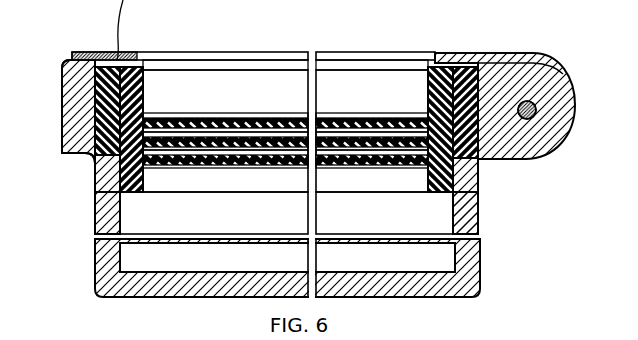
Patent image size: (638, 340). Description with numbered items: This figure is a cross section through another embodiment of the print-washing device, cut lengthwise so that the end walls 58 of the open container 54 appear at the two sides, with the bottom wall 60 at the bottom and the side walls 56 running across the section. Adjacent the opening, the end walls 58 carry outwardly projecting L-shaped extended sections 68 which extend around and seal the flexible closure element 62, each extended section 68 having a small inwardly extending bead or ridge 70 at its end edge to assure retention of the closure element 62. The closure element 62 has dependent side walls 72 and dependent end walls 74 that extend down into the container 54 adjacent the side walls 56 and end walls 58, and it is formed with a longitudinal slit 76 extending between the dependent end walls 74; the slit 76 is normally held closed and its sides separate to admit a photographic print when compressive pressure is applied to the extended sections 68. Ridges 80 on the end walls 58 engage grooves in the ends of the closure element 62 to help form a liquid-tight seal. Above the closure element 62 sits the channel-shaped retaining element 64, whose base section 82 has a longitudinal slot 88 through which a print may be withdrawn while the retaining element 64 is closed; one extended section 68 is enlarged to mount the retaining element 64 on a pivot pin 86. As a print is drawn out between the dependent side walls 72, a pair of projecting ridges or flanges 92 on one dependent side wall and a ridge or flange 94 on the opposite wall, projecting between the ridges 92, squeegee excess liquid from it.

The open container 54 is at (88, 187).
The side walls 56 is at (252, 222).
The end walls 58 is at (96, 220).
The bottom wall 60 is at (347, 272).
The flexible closure element 62 is at (151, 88).
The channel-shaped retaining element 64 is at (502, 48).
The extended sections 68 is at (62, 146).
The bead or ridge 70 is at (105, 66).
The dependent side walls 72 is at (326, 180).
The dependent end walls 74 is at (125, 193).
The longitudinal slit 76 is at (321, 92).
The ridges 80 is at (455, 70).
The base section 82 is at (120, 66).
The pivot pin 86 is at (537, 110).
The longitudinal slot 88 is at (229, 56).
The projecting ridges or flanges 92 is at (235, 118).
The ridge or flange 94 is at (371, 140).